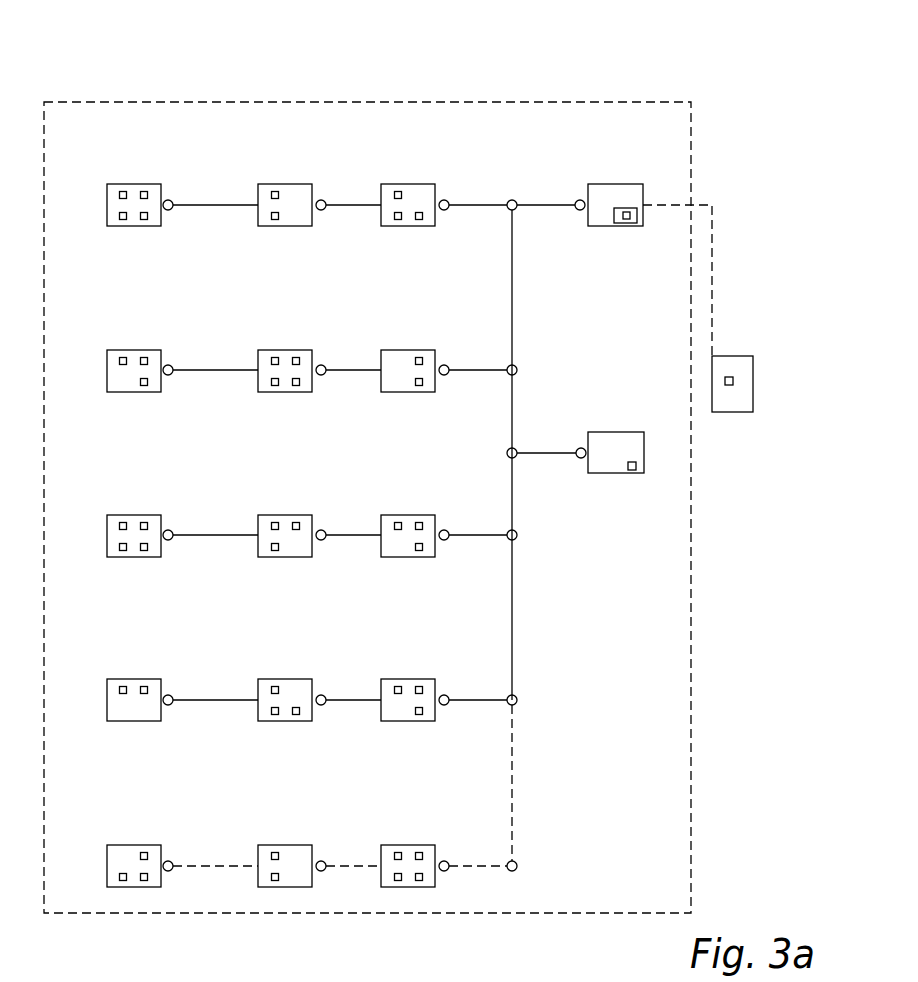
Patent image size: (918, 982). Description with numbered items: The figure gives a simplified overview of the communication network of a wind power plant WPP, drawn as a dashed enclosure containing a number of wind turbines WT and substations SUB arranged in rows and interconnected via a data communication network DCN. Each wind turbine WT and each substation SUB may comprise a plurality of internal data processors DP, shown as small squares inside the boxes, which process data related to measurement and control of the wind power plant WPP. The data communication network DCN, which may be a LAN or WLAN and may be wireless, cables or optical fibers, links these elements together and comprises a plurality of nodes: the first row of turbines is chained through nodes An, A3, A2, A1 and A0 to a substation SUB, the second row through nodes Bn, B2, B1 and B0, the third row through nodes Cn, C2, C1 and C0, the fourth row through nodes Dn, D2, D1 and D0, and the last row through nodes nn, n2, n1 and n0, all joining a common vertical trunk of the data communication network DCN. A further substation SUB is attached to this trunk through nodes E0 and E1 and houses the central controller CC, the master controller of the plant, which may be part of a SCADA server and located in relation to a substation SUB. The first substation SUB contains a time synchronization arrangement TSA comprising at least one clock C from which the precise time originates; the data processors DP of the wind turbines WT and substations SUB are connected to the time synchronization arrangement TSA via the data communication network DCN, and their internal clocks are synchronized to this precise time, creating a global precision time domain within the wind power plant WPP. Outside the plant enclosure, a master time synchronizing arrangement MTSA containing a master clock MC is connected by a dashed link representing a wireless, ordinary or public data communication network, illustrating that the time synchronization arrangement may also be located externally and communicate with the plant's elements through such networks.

The wind power plant WPP is at (368, 102).
The wind turbine WT is at (148, 184).
The data processor DP is at (144, 191).
The data communication network DCN is at (540, 205).
The substation SUB is at (643, 156).
The time synchronizing arrangement TSA is at (628, 224).
The clock C is at (624, 224).
The central controller CC is at (636, 471).
The master time synchronizing arrangement MTSA is at (733, 356).
The management controller MC is at (731, 386).
The node An is at (168, 200).
The node A3 is at (321, 200).
The node A2 is at (444, 200).
The node A1 is at (512, 200).
The node A0 is at (580, 200).
The node Bn is at (168, 365).
The node B2 is at (321, 365).
The node B1 is at (444, 365).
The node B0 is at (518, 368).
The node Cn is at (168, 530).
The node C2 is at (321, 530).
The node C1 is at (444, 530).
The node C0 is at (518, 533).
The node Dn is at (168, 695).
The node D2 is at (321, 695).
The node D1 is at (444, 695).
The node D0 is at (518, 698).
The node nn is at (168, 861).
The node n2 is at (321, 861).
The node n1 is at (444, 861).
The node n0 is at (518, 864).
The node E0 is at (517, 448).
The node E1 is at (574, 468).